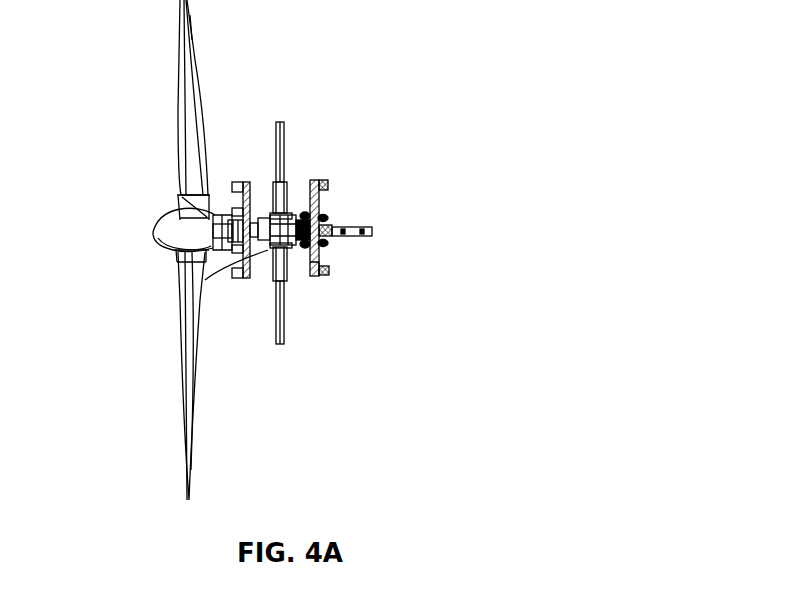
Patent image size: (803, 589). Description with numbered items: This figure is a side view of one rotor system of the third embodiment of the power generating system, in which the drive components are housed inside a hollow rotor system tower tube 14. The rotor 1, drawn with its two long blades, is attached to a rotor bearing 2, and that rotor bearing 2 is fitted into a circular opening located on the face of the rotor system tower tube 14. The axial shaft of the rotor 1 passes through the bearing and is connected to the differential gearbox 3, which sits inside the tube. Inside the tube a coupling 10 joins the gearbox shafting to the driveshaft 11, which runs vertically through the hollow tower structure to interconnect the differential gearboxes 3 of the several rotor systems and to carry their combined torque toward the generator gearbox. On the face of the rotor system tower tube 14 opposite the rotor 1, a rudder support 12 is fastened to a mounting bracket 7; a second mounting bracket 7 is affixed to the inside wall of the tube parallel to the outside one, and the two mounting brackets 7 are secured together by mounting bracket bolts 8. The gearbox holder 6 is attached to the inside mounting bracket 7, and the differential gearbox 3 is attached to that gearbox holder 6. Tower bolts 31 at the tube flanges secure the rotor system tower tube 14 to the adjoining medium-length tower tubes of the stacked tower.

The rotor 1 is at (188, 37).
The rotor bearing 2 is at (172, 252).
The differential gearbox 3 is at (273, 200).
The gearbox holder 6 is at (305, 266).
The mounting bracket 7 is at (328, 244).
The mounting bracket bolts 8 is at (318, 216).
The coupling 10 is at (273, 195).
The driveshaft 11 is at (287, 122).
The rudder support 12 is at (355, 238).
The rotor system tower tube 14 is at (232, 200).
The tower bolts 31 is at (327, 182).